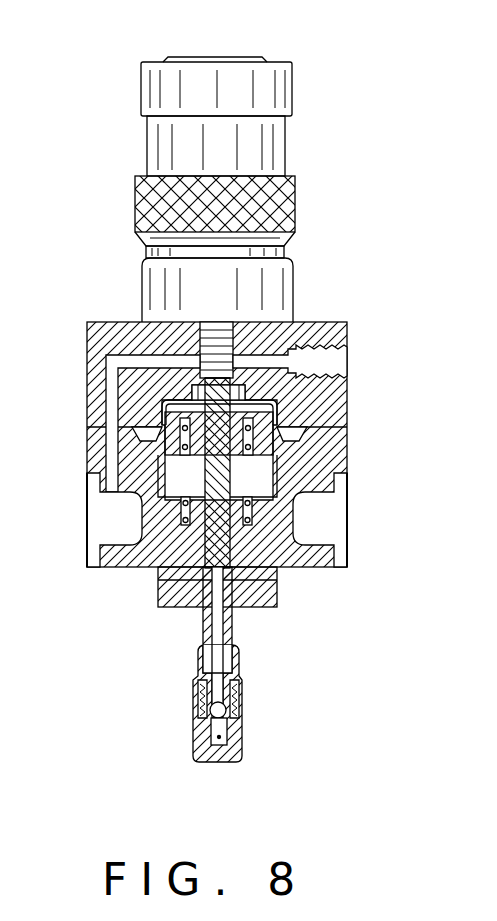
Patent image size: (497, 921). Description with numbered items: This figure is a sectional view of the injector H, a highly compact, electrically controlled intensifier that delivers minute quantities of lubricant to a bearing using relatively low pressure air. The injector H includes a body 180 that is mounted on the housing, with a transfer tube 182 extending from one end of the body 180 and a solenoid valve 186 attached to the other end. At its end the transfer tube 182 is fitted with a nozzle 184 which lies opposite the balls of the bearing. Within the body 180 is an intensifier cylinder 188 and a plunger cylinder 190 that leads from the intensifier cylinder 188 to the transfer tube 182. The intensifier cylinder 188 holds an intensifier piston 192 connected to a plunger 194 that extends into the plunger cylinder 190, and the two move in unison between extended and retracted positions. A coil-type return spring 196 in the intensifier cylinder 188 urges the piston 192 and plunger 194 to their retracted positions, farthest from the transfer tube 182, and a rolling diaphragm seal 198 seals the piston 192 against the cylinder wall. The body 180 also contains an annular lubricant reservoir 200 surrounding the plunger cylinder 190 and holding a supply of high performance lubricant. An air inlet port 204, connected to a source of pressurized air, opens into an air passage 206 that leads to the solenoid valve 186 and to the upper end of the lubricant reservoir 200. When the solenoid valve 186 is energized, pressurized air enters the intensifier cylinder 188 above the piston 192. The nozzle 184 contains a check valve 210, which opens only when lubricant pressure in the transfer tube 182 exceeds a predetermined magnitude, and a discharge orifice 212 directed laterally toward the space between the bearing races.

The injector H is at (108, 228).
The body 180 is at (314, 333).
The transfer tube 182 is at (205, 633).
The nozzle 184 is at (202, 732).
The solenoid valve 186 is at (141, 262).
The intensifier cylinder 188 is at (266, 470).
The plunger cylinder 190 is at (273, 579).
The intensifier piston 192 is at (285, 438).
The plunger 194 is at (300, 548).
The return spring 196 is at (183, 484).
The rolling diaphragm seal 198 is at (165, 456).
The lubricant reservoir 200 is at (125, 522).
The air inlet port 204 is at (322, 358).
The air passage 206 is at (133, 360).
The check valve 210 is at (237, 708).
The discharge orifice 212 is at (230, 741).